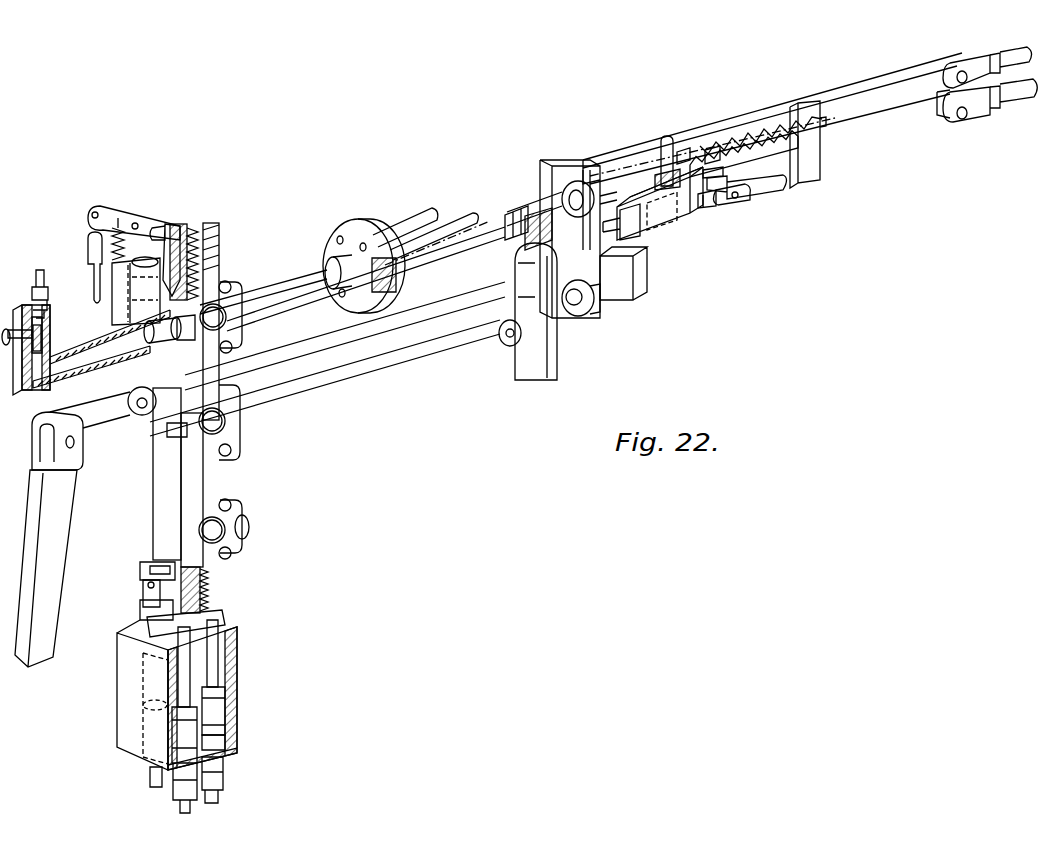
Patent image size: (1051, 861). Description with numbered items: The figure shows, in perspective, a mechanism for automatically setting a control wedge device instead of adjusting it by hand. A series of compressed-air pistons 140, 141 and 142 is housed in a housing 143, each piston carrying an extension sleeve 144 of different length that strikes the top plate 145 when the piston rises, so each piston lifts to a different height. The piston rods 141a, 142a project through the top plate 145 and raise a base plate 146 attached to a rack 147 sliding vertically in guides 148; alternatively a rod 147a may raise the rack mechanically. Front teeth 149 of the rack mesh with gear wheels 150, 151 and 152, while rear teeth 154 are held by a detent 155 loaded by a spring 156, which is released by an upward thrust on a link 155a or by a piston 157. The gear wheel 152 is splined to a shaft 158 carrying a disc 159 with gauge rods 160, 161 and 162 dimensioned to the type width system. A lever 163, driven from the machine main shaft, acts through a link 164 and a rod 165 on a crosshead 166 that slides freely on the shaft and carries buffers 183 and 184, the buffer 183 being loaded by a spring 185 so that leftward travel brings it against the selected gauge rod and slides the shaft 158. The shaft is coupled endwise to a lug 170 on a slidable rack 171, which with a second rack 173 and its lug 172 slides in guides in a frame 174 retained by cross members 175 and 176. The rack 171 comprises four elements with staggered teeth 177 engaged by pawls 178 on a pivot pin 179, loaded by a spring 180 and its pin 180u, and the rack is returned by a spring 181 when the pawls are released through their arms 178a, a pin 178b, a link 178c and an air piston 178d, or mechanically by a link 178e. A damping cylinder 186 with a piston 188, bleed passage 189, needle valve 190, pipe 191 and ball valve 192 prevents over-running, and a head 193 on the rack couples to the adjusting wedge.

The piston 140 is at (160, 727).
The piston 141 is at (185, 762).
The piston rod 141a is at (185, 673).
The piston 142 is at (217, 727).
The piston rod 142a is at (213, 645).
The housing 143 is at (237, 662).
The extension sleeve 144 is at (217, 700).
The top plate 145 is at (222, 620).
The base plate 146 is at (150, 616).
The rack 147 is at (172, 572).
The rod 147a is at (150, 600).
The guides 148 is at (165, 490).
The teeth 149 is at (202, 585).
The gear wheel 150 is at (235, 530).
The gear wheel 151 is at (224, 428).
The gear wheel 152 is at (226, 318).
The teeth 154 is at (200, 283).
The detent 155 is at (172, 238).
The link 155a is at (95, 263).
The spring 156 is at (120, 226).
The piston 157 is at (93, 282).
The shaft 158 is at (313, 278).
The disc 159 is at (337, 235).
The gauge rod 160 is at (375, 228).
The gauge rod 161 is at (422, 222).
The gauge rod 162 is at (472, 240).
The lever 163 is at (55, 527).
The link 164 is at (117, 418).
The rod 165 is at (433, 308).
The crosshead 166 is at (538, 283).
The lug 170 is at (573, 173).
The slidable rack 171 is at (855, 92).
The lug 172 is at (590, 308).
The slidable rack 173 is at (634, 270).
The frame 174 is at (703, 123).
The cross member 175 is at (588, 172).
The cross member 176 is at (805, 107).
The teeth 177 is at (723, 147).
The pawls 178 is at (670, 193).
The downwardly directed arms 178a is at (693, 187).
The pin 178b is at (700, 192).
The link 178c is at (712, 200).
The piston 178d is at (640, 183).
The link 178e is at (737, 190).
The pivot pin 179 is at (712, 150).
The spring 180 is at (663, 137).
The collar 180u is at (670, 172).
The spring 181 is at (765, 130).
The buffer 183 is at (525, 215).
The buffer 184 is at (507, 335).
The spring 185 is at (512, 212).
The cylinder 186 is at (78, 372).
The piston 188 is at (157, 343).
The bleed passage 189 is at (30, 362).
The needle valve 190 is at (33, 338).
The pipe 191 is at (40, 270).
The spring-loaded ball valve 192 is at (47, 340).
The head 193 is at (940, 96).